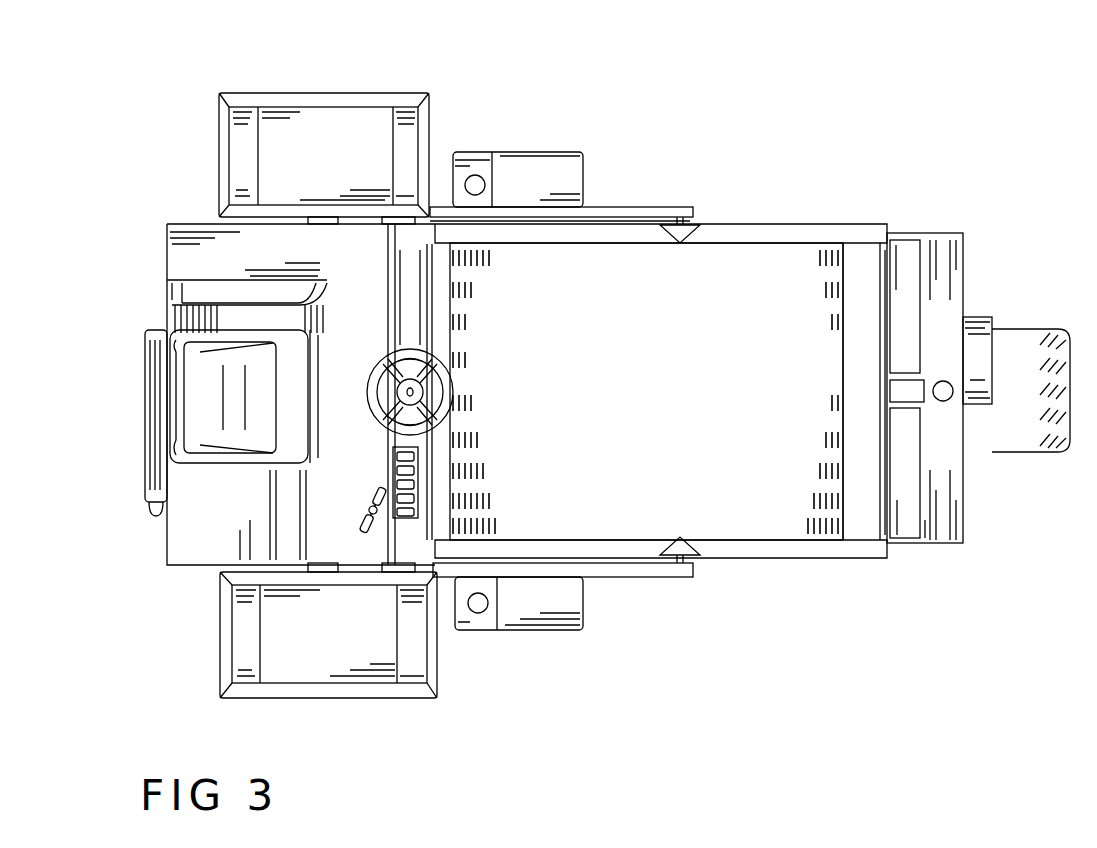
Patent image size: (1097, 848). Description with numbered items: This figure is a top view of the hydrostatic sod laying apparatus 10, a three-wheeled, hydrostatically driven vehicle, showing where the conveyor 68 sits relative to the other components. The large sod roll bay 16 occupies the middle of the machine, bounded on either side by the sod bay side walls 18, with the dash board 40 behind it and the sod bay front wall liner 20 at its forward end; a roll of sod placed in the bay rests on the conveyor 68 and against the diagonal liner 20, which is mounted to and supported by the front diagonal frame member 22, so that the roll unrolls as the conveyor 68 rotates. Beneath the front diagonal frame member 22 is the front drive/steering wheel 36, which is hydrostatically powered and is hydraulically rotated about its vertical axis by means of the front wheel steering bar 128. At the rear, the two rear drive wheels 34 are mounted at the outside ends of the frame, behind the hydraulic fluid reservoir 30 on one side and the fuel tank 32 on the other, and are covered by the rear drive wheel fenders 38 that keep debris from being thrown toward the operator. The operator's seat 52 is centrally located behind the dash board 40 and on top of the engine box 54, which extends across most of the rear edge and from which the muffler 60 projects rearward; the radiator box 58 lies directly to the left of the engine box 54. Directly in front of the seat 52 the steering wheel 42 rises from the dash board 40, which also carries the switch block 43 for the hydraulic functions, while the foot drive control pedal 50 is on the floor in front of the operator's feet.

The hydrostatic sod laying apparatus 10 is at (245, 72).
The sod roll bay 16 is at (718, 238).
The sod bay side walls 18 is at (752, 215).
The sod bay front wall liner 20 is at (867, 297).
The front diagonal frame member 22 is at (932, 229).
The hydraulic fluid reservoir 30 is at (527, 635).
The fuel tank 32 is at (527, 148).
The rear drive wheels 34 is at (438, 92).
The front drive/steering wheel 36 is at (1023, 458).
The rear drive wheel fenders 38 is at (395, 85).
The dash board 40 is at (407, 250).
The steering wheel 42 is at (407, 330).
The switch block 43 is at (382, 467).
The foot drive control pedal 50 is at (362, 508).
The operator's seat 52 is at (197, 343).
The engine box 54 is at (220, 500).
The radiator box 58 is at (160, 246).
The muffler 60 is at (143, 378).
The conveyor 68 is at (606, 412).
The front wheel steering bar 128 is at (980, 312).